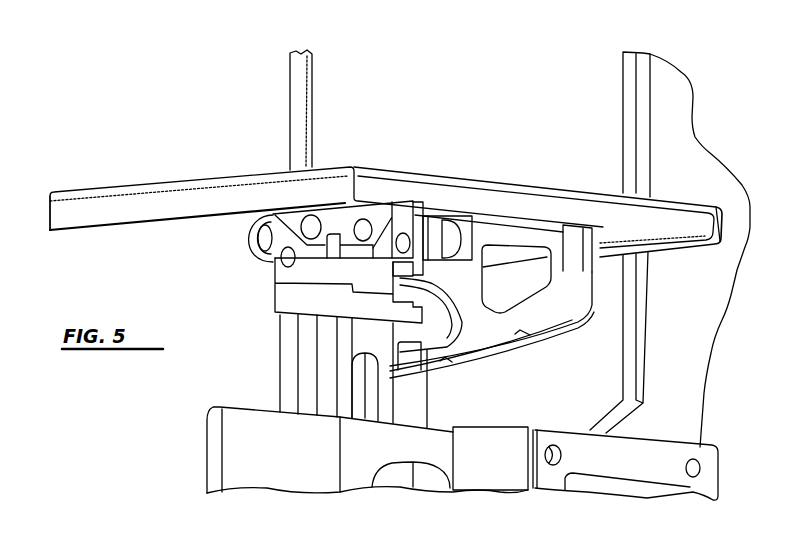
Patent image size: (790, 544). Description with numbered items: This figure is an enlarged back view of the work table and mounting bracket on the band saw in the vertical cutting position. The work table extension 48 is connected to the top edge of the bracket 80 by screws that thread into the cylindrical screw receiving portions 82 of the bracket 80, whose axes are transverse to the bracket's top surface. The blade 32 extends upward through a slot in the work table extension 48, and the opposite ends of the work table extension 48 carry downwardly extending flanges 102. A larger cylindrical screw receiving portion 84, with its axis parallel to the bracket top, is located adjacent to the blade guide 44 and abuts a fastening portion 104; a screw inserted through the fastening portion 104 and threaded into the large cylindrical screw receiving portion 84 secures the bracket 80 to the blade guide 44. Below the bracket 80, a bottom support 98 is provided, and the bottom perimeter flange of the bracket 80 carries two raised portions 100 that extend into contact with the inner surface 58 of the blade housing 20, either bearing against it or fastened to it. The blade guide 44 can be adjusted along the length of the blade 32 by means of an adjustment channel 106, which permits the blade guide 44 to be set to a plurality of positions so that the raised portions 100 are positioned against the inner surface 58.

The blade housing 20 is at (657, 78).
The blade 32 is at (302, 93).
The work table extension 48 is at (97, 203).
The blade guide 44 is at (250, 247).
The inner surface 58 is at (530, 333).
The bracket 80 is at (575, 287).
The cylindrical screw receiving portions 82 is at (470, 232).
The large cylindrical screw receiving portion 84 is at (433, 238).
The bottom support 98 is at (383, 340).
The raised portions 100 is at (567, 327).
The downwardly extending flanges 102 is at (85, 217).
The fastening portion 104 is at (418, 210).
The adjustment channel 106 is at (327, 378).